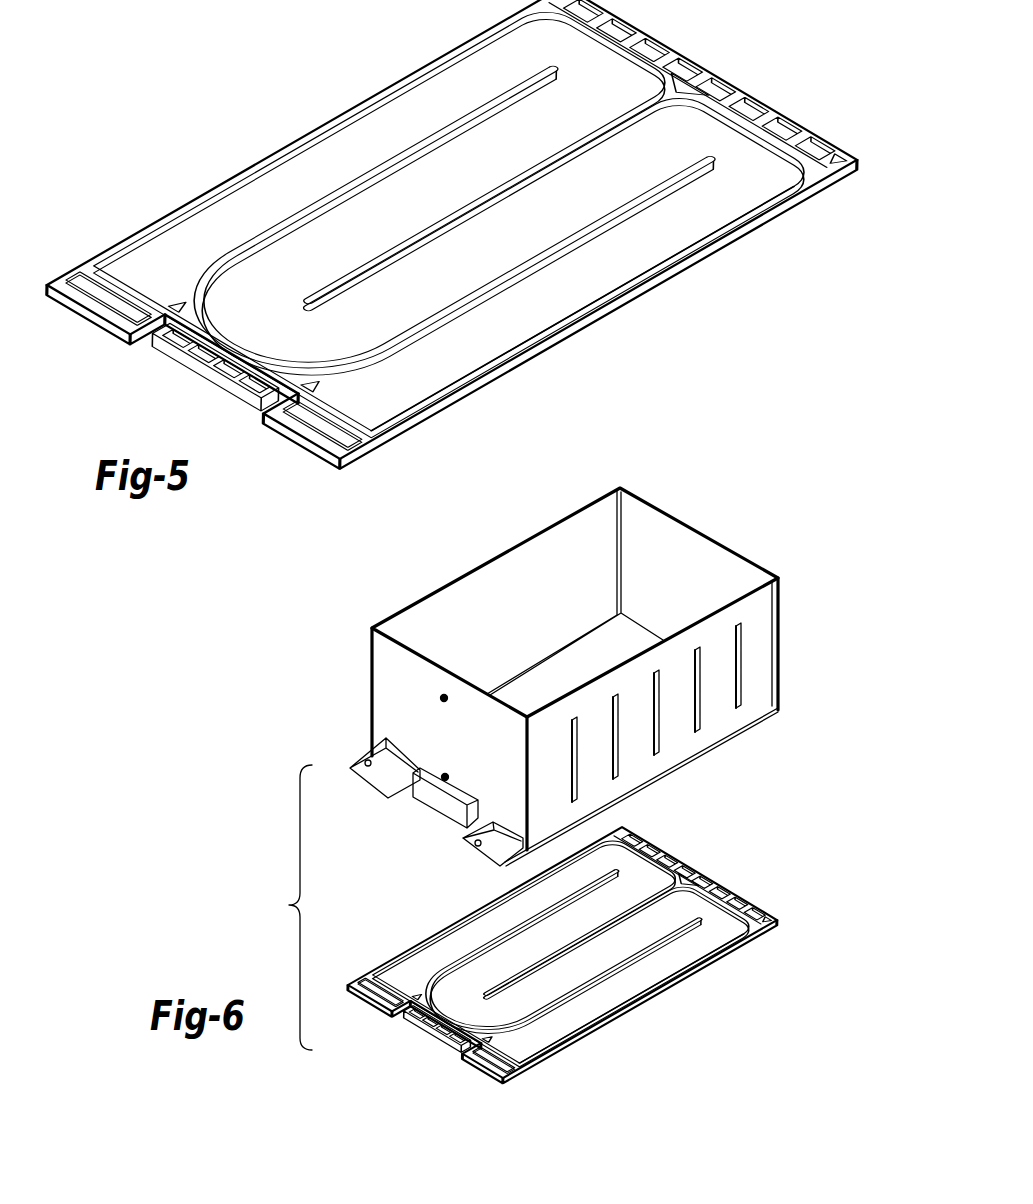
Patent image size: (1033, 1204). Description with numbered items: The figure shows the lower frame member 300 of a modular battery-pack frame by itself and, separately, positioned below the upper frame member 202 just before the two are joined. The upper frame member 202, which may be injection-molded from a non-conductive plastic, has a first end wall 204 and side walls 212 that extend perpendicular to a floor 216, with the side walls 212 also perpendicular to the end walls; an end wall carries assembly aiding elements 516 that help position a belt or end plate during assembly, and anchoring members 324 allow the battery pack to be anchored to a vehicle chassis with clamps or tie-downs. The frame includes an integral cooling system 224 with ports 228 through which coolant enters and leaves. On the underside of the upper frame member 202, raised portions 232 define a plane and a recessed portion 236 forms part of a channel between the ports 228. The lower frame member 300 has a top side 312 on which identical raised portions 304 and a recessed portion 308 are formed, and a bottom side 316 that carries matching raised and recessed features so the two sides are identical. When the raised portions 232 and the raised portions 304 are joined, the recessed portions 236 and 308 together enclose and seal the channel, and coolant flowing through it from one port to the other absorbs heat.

In FIG. 5, the lower frame member 300 is at (451, 234).
In FIG. 6, the lower frame member 300 is at (562, 955).
In FIG. 5, the raised portions 304 is at (433, 233).
In FIG. 5, the recessed portion 308 is at (468, 219).
In FIG. 5, the top side 312 is at (451, 234).
In FIG. 6, the top side 312 is at (562, 955).
In FIG. 5, the bottom side 316 is at (215, 367).
In FIG. 6, the bottom side 316 is at (422, 1040).
In FIG. 6, the upper frame member 202 is at (552, 653).
In FIG. 6, the first end wall 204 is at (575, 669).
In FIG. 6, the side walls 212 is at (656, 712).
In FIG. 6, the floor 216 is at (575, 592).
In FIG. 6, the cooling system 224 is at (283, 907).
In FIG. 6, the ports 228 is at (355, 762).
In FIG. 6, the raised portions 232 is at (660, 787).
In FIG. 6, the recessed portion 236 is at (700, 768).
In FIG. 6, the anchoring members 324 is at (443, 805).
In FIG. 6, the assembly aiding elements 516 is at (443, 774).